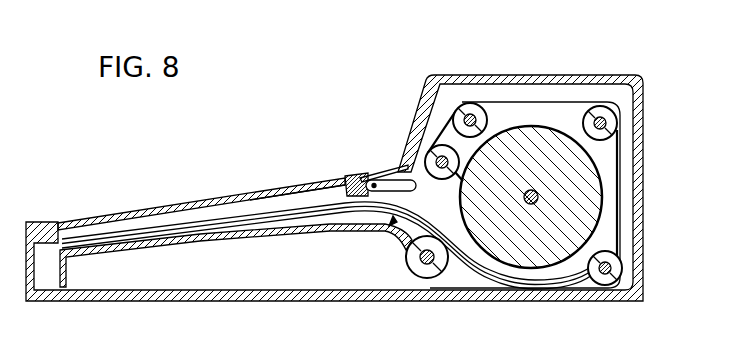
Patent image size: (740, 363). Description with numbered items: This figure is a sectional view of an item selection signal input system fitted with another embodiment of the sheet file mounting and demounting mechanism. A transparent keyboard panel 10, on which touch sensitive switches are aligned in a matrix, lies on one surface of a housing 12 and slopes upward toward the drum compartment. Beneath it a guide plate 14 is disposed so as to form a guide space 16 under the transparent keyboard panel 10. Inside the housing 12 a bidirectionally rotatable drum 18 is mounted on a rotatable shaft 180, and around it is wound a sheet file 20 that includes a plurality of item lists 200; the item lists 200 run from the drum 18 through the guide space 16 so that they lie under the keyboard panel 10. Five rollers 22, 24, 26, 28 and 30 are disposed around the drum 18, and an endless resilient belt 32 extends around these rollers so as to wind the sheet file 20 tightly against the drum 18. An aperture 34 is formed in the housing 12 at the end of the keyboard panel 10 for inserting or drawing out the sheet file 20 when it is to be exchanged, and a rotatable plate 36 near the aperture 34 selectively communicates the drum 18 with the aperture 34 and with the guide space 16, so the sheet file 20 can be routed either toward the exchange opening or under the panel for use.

The transparent keyboard panel 10 is at (168, 203).
The housing 12 is at (42, 228).
The guide plate 14 is at (208, 241).
The guide space 16 is at (318, 188).
The bidirectionally rotatable drum 18 is at (598, 170).
The sheet file 20 is at (392, 218).
The roller 22 is at (440, 145).
The roller 24 is at (472, 103).
The roller 26 is at (604, 106).
The roller 28 is at (622, 266).
The roller 30 is at (418, 272).
The endless resilient belt 32 is at (623, 218).
The aperture 34 is at (378, 173).
The rotatable plate 36 is at (400, 186).
The rotatable shaft 180 is at (530, 205).
The item lists 200 is at (78, 242).